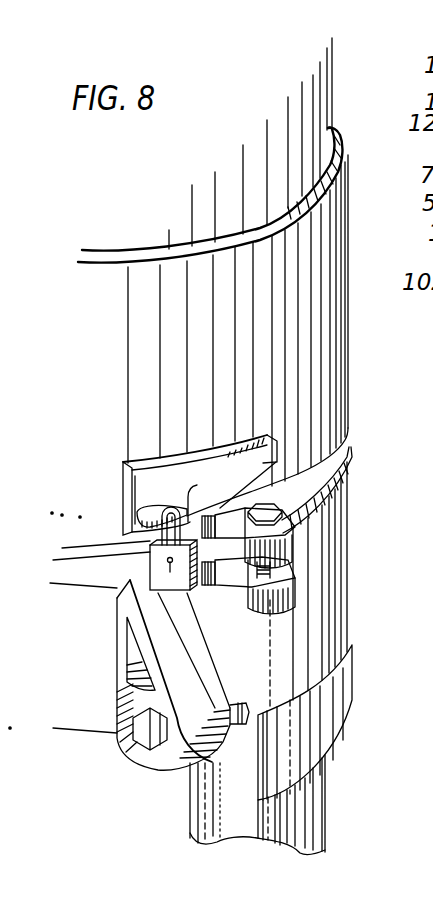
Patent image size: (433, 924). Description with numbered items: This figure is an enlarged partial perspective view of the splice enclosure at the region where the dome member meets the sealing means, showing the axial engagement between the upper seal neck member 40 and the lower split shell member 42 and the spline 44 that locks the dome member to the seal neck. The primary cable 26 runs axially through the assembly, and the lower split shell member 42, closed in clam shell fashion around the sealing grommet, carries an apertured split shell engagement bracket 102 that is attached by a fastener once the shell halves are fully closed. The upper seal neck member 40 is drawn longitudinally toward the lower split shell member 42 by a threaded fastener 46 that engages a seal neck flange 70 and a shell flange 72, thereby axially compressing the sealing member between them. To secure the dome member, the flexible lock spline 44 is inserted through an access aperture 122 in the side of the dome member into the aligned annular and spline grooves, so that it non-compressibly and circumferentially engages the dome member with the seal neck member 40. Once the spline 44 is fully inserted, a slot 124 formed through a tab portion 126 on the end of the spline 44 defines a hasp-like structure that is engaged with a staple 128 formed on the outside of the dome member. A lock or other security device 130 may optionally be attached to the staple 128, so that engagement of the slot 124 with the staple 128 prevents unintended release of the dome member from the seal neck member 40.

The primary cable 26 is at (330, 797).
The upper seal neck member 40 is at (347, 447).
The lower split shell member 42 is at (352, 618).
The spline 44 is at (192, 465).
The fastener 46 is at (317, 498).
The seal neck flange 70 is at (288, 540).
The shell flange 72 is at (240, 610).
The split shell engagement bracket 102 is at (123, 747).
The access aperture 122 is at (265, 460).
The slot 124 is at (249, 460).
The tab portion 126 is at (153, 483).
The staple 128 is at (134, 506).
The lock 130 is at (137, 588).